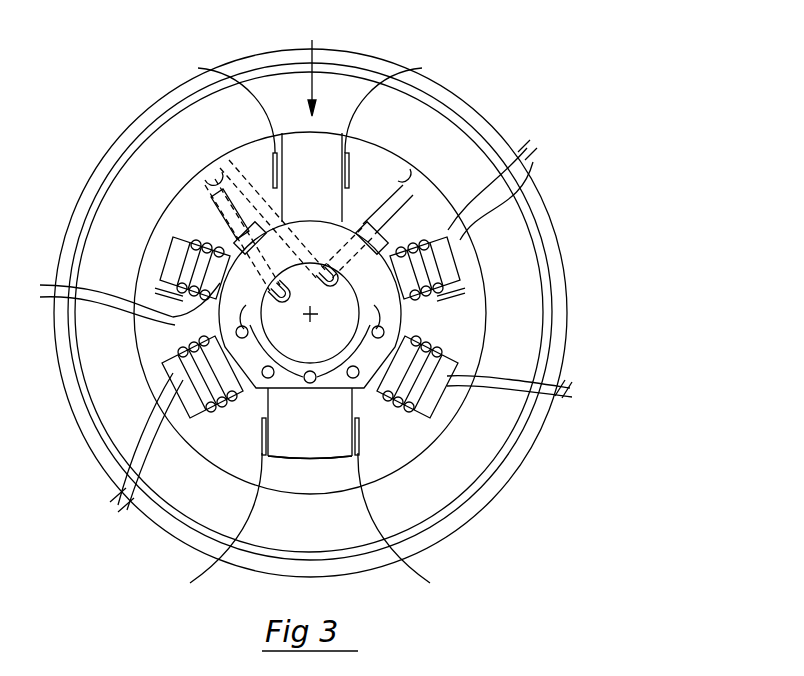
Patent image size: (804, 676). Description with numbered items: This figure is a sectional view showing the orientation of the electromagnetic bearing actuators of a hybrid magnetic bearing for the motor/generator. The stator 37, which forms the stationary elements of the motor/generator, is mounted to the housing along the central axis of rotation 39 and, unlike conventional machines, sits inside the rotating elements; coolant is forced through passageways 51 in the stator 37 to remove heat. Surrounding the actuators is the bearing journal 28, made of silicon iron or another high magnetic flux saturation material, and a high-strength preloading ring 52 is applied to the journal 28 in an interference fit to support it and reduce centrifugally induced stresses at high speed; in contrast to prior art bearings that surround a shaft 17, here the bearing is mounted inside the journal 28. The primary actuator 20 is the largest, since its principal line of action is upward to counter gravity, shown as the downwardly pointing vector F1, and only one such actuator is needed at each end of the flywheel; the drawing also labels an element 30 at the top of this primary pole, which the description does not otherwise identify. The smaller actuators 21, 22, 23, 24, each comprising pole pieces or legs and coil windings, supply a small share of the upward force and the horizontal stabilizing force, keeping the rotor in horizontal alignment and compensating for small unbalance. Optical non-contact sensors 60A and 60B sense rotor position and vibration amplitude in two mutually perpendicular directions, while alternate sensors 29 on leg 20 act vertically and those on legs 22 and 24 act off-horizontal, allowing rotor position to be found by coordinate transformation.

The shaft 17 is at (500, 507).
The primary actuator 20 is at (308, 448).
The actuator 21 is at (177, 370).
The actuator 22 is at (165, 245).
The actuator 23 is at (447, 390).
The actuator 24 is at (462, 240).
The bearing journal 28 is at (210, 510).
The alternate sensors 29 is at (222, 64).
The upper pole piece 30 is at (336, 133).
The stator 37 is at (455, 93).
The central axis of rotation 39 is at (310, 318).
The passageways 51 is at (307, 323).
The preloading ring 52 is at (470, 153).
The sensor 60A is at (210, 172).
The sensor 60B is at (400, 164).
The gravity vector F1 is at (316, 63).